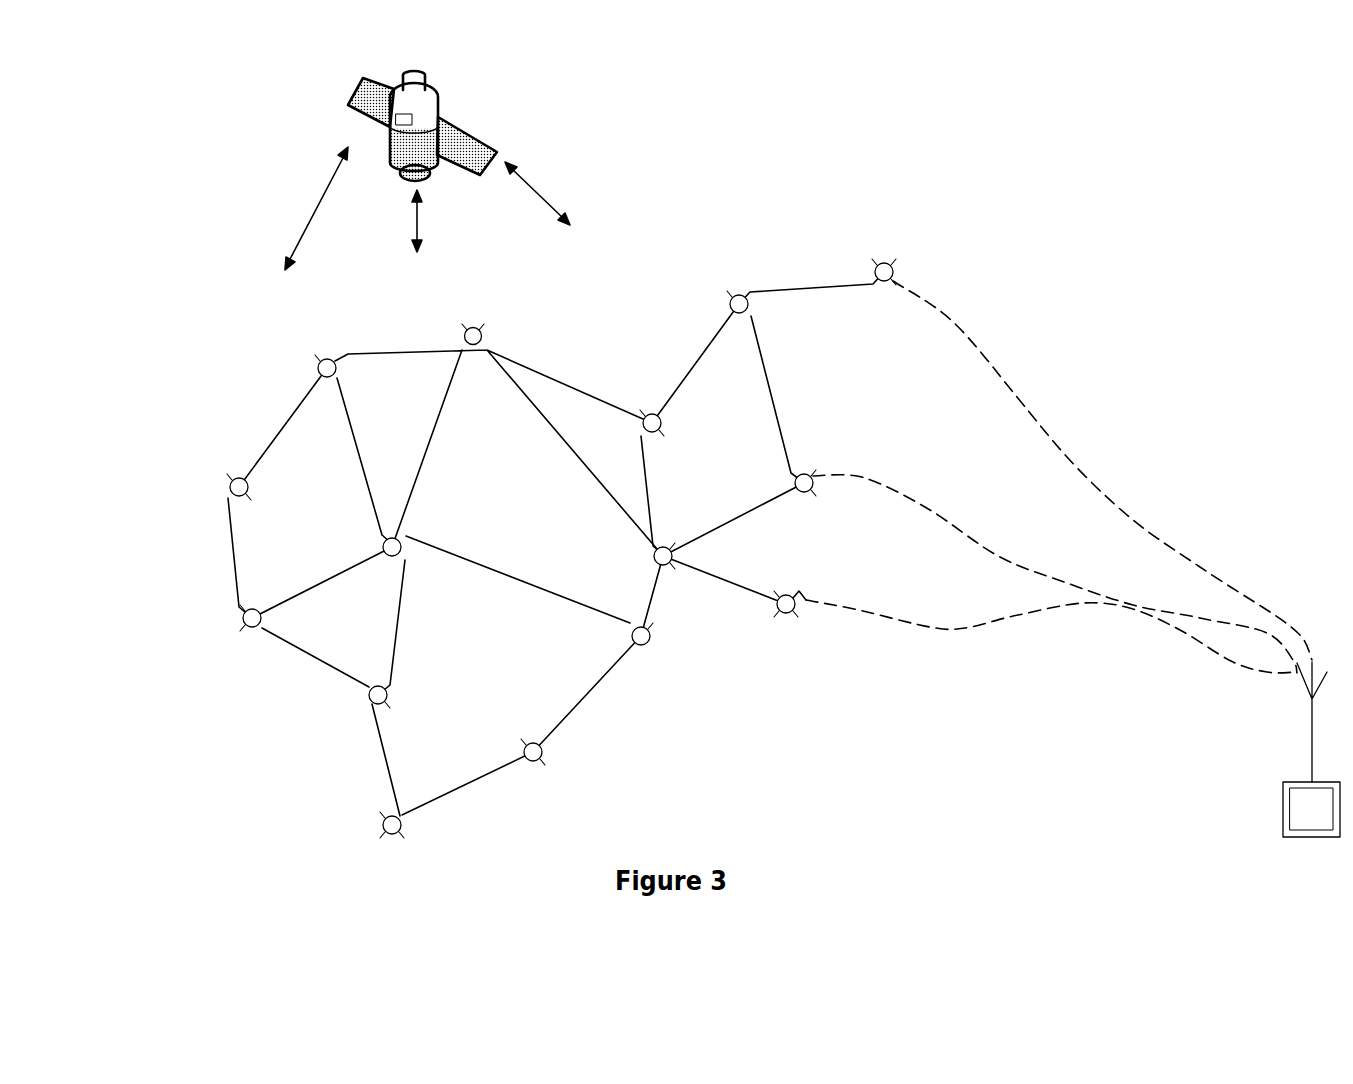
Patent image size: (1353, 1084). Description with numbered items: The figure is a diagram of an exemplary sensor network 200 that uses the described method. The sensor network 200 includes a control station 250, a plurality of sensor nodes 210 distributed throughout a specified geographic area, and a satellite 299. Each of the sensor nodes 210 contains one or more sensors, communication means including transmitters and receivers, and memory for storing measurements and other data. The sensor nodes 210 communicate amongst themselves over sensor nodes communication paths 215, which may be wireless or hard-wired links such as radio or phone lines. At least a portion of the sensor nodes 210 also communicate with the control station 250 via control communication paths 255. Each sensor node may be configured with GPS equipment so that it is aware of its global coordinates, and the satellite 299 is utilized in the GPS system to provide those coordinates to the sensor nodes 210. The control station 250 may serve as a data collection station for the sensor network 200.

The satellite 299 is at (440, 90).
The sensor nodes communication paths 215 is at (803, 287).
The control communication paths 255 is at (1010, 387).
The sensor nodes 210 is at (367, 707).
The sensor network 200 is at (769, 481).
The control station 250 is at (1292, 828).